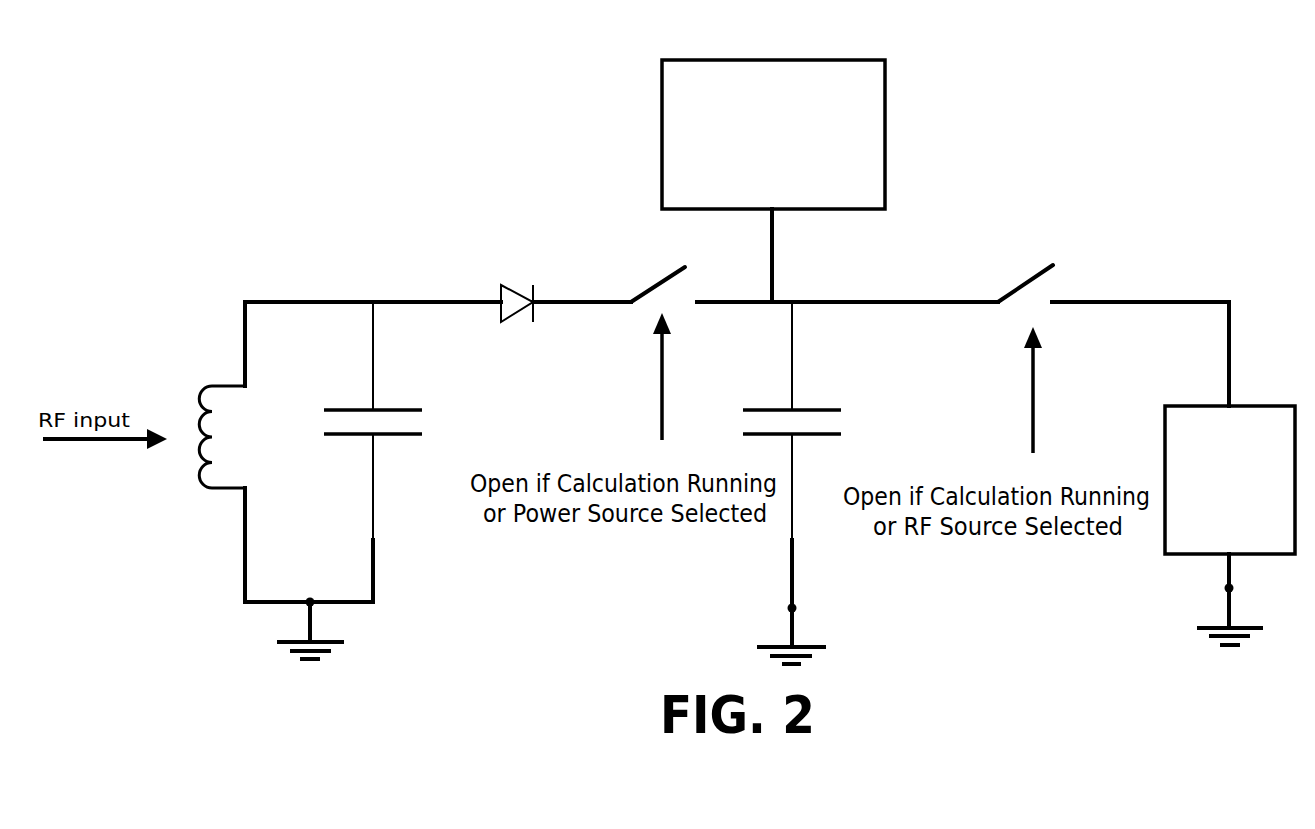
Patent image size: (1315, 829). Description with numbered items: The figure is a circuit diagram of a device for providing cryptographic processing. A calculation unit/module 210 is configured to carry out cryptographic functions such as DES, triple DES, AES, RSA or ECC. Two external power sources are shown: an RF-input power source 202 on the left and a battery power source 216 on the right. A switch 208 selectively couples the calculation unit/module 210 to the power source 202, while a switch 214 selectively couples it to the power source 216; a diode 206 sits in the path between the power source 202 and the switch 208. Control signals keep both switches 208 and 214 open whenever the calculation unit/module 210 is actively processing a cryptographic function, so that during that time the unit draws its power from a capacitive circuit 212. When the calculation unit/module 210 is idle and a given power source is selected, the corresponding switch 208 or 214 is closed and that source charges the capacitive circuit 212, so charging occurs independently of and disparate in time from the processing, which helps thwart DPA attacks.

The external power source 202 is at (226, 438).
The diode 206 is at (512, 270).
The switch 208 is at (663, 263).
The calculation unit/module 210 is at (833, 63).
The capacitive circuit 212 is at (828, 398).
The switch 214 is at (1054, 252).
The external power source 216 is at (1242, 400).